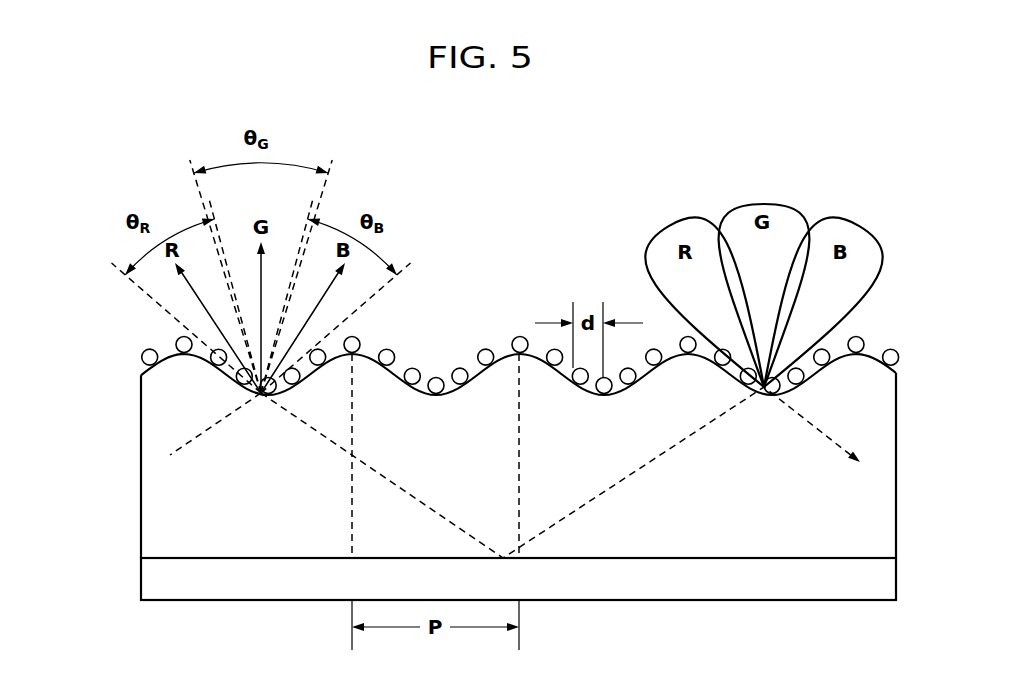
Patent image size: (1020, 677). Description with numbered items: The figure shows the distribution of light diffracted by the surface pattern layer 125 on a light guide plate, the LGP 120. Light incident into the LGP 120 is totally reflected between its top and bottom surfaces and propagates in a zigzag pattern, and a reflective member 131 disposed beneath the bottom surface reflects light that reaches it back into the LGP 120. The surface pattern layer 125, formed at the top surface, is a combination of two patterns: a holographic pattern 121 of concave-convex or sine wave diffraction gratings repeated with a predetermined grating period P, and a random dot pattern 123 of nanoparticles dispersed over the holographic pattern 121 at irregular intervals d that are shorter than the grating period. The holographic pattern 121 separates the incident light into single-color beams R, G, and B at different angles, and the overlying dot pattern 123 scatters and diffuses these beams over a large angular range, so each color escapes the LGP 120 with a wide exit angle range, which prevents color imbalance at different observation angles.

The LGP 120 is at (150, 434).
The holographic pattern 121 is at (170, 354).
The dot pattern 123 is at (141, 357).
The surface pattern layer 125 is at (471, 333).
The reflective member 131 is at (150, 582).